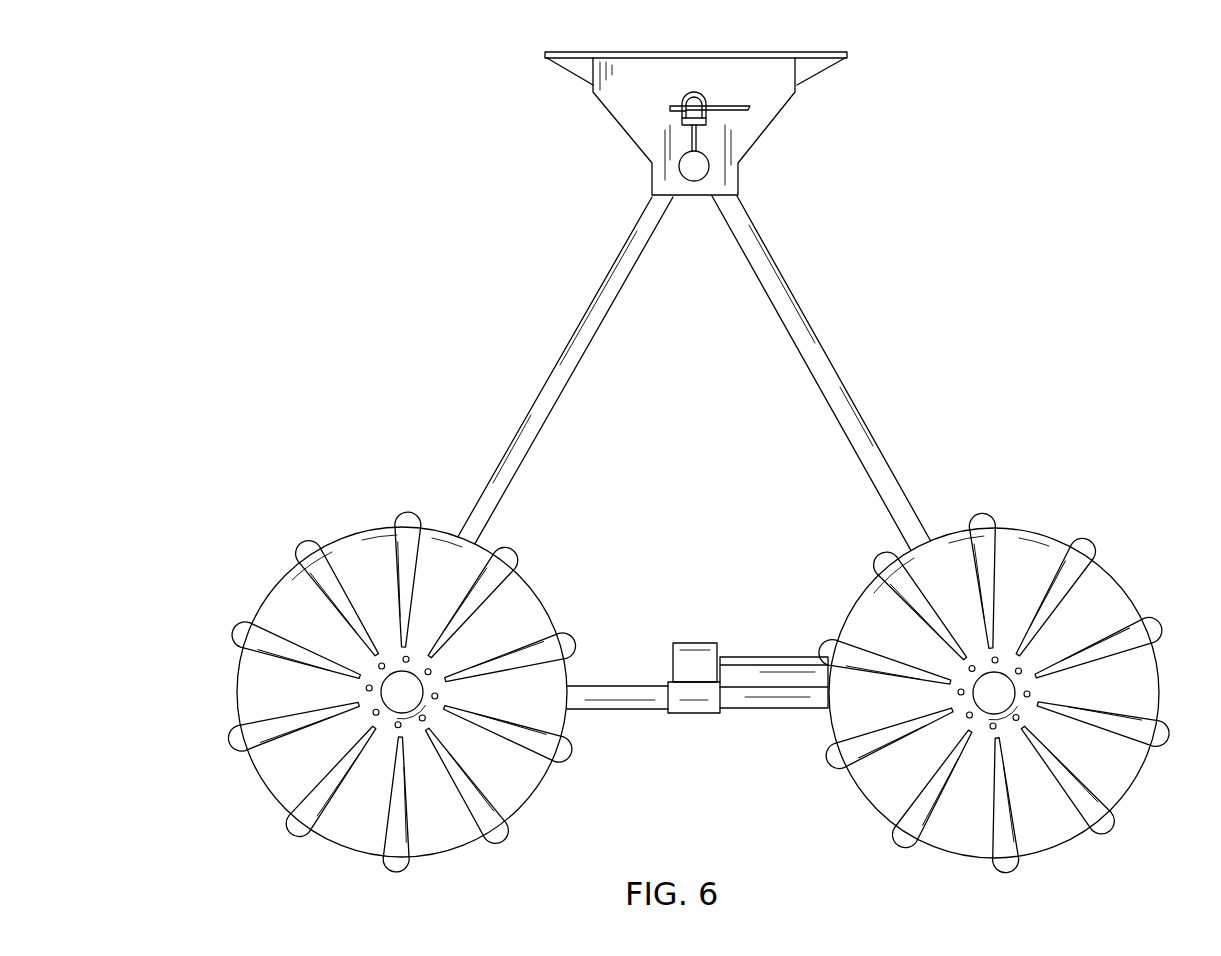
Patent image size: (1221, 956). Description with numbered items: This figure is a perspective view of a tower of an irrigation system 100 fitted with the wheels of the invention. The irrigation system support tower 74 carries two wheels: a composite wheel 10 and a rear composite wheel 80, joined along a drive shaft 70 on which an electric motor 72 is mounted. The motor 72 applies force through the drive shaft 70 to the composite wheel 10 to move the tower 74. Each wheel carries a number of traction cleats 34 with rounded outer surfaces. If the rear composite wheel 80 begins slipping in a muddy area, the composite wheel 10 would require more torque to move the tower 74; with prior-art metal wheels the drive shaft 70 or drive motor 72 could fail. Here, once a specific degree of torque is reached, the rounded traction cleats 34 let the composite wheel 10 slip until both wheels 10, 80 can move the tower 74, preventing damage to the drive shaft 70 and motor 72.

The irrigation system 100 is at (843, 242).
The irrigation system support tower 74 is at (548, 405).
The rear composite wheel 80 is at (300, 613).
The composite wheel 10 is at (1000, 656).
The traction cleat 34 is at (1108, 610).
The drive shaft 70 is at (768, 656).
The electric motor 72 is at (700, 668).